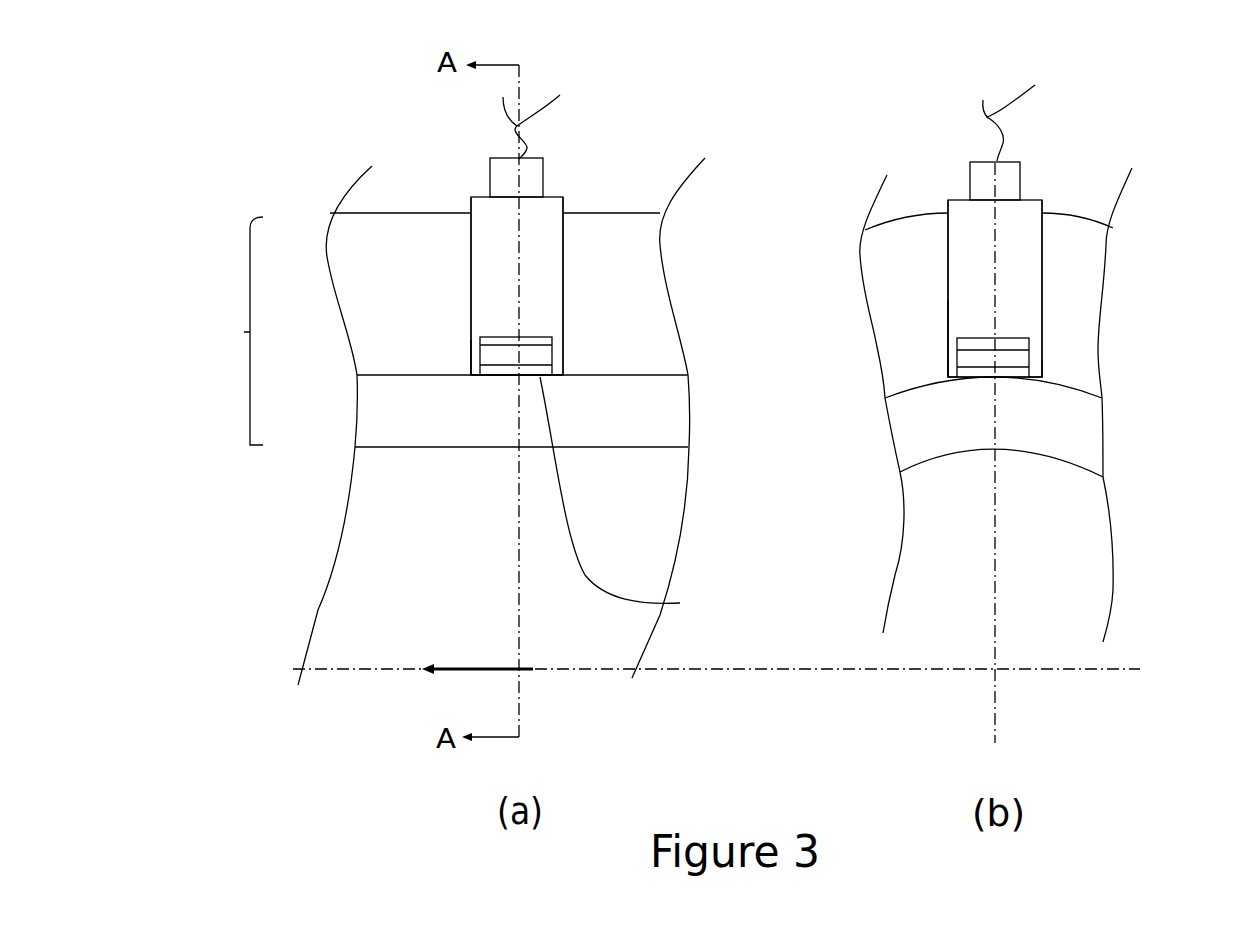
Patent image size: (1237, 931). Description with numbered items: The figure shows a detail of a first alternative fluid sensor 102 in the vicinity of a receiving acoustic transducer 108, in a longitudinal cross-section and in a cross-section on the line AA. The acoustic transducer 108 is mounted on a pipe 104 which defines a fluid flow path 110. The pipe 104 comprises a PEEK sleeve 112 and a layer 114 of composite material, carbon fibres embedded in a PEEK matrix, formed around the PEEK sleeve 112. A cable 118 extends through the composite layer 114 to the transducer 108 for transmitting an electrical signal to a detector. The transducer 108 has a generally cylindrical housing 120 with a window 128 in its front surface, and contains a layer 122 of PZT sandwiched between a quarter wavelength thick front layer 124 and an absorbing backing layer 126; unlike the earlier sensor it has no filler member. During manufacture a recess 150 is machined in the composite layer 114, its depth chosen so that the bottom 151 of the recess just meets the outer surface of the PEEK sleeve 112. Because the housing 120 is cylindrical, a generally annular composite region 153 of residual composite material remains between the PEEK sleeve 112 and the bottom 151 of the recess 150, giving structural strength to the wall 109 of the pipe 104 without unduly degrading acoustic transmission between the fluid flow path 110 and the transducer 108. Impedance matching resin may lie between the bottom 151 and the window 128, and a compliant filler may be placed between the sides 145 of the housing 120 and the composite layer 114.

The first alternative fluid sensor 102 is at (329, 729).
The pipe 104 is at (196, 414).
The acoustic transducer 108 is at (532, 296).
The wall 109 is at (244, 333).
The fluid flow path 110 is at (472, 601).
The PEEK sleeve 112 is at (363, 422).
The composite layer 114 is at (363, 305).
The cable 118 is at (784, 106).
The housing 120 is at (674, 226).
The sides 145 is at (674, 226).
The recess 150 is at (471, 258).
The layer of PZT 122 is at (542, 358).
The front layer 124 is at (629, 498).
The absorbing backing layer 126 is at (537, 338).
The window 128 is at (517, 390).
The bottom of the recess 151 is at (475, 377).
The composite region 153 is at (932, 375).